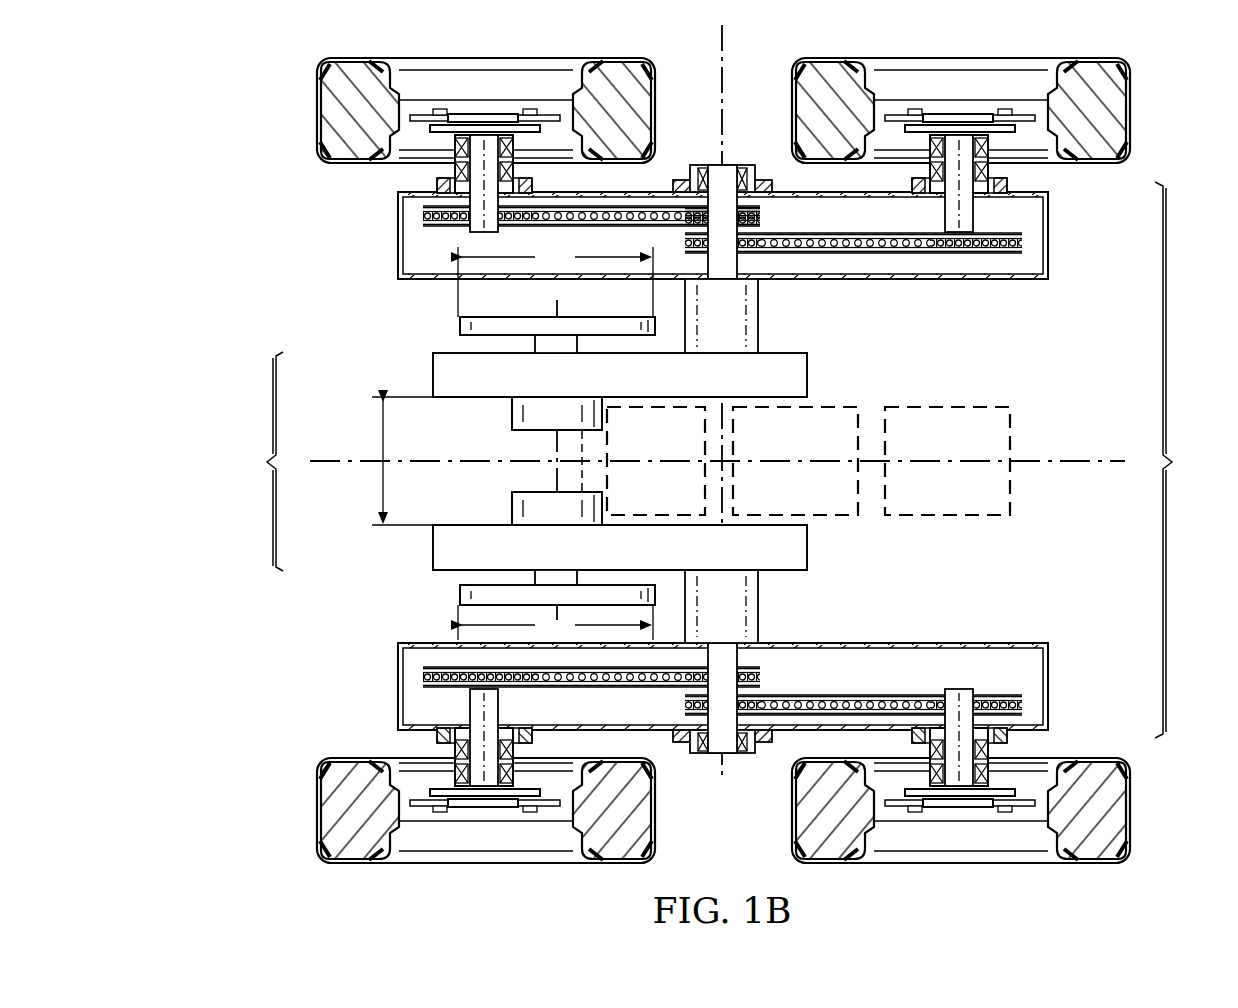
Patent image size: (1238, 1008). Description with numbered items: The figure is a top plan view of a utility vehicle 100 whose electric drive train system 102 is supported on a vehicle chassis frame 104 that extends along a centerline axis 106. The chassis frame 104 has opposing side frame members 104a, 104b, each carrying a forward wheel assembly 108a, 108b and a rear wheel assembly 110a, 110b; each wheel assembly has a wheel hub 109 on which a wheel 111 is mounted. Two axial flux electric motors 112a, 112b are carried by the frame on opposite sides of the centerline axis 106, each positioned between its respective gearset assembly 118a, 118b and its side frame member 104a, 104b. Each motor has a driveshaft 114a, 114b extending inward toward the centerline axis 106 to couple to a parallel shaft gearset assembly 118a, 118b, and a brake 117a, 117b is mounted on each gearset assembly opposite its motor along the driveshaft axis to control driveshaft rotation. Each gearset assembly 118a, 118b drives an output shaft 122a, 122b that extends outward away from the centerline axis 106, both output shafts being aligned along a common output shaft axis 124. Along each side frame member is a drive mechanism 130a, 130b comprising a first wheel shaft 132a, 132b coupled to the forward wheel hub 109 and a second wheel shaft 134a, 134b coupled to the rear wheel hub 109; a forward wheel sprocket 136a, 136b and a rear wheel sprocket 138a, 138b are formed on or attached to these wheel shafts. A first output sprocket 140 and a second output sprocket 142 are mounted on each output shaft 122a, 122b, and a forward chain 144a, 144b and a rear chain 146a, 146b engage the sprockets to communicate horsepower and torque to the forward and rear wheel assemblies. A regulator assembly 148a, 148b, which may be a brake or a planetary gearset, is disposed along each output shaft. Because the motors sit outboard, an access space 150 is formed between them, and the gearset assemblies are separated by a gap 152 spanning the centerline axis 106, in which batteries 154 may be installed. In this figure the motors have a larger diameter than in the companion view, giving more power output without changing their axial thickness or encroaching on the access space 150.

The utility vehicle 100 is at (157, 163).
The electric drive train system 102 is at (1189, 460).
The vehicle chassis frame 104 is at (708, 469).
The side frame member 104a is at (398, 262).
The side frame member 104b is at (398, 710).
The centerline axis 106 is at (1048, 461).
The forward wheel assembly 108a is at (312, 105).
The forward wheel assembly 108b is at (313, 820).
The wheel hub 109 is at (548, 116).
The rear wheel assembly 110a is at (1134, 77).
The rear wheel assembly 110b is at (1134, 841).
The wheel 111 is at (325, 140).
The first axial flux electric motor 112a is at (462, 325).
The second axial flux electric motor 112b is at (462, 597).
The driveshaft 114a is at (580, 343).
The driveshaft 114b is at (580, 583).
The brake 117a is at (512, 415).
The brake 117b is at (512, 507).
The gearset assembly 118a is at (430, 374).
The gearset assembly 118b is at (430, 549).
The output shaft 122a is at (730, 180).
The output shaft 122b is at (715, 748).
The output shaft axis 124 is at (720, 46).
The drive mechanism 130a is at (722, 256).
The drive mechanism 130b is at (722, 689).
The first wheel shaft 132a is at (487, 116).
The first wheel shaft 132b is at (485, 806).
The second wheel shaft 134a is at (960, 116).
The second wheel shaft 134b is at (960, 806).
The forward wheel sprocket 136a is at (424, 202).
The forward wheel sprocket 136b is at (424, 661).
The rear wheel sprocket 138a is at (1033, 260).
The rear wheel sprocket 138b is at (1033, 718).
The first output sprocket 140 is at (698, 214).
The second output sprocket 142 is at (754, 243).
The forward chain 144a is at (534, 229).
The forward chain 144b is at (534, 687).
The rear chain 146a is at (911, 233).
The rear chain 146b is at (911, 692).
The regulator assembly 148a is at (758, 313).
The regulator assembly 148b is at (758, 605).
The access space 150 is at (249, 461).
The gap 152 is at (382, 437).
The battery 154 is at (634, 471).